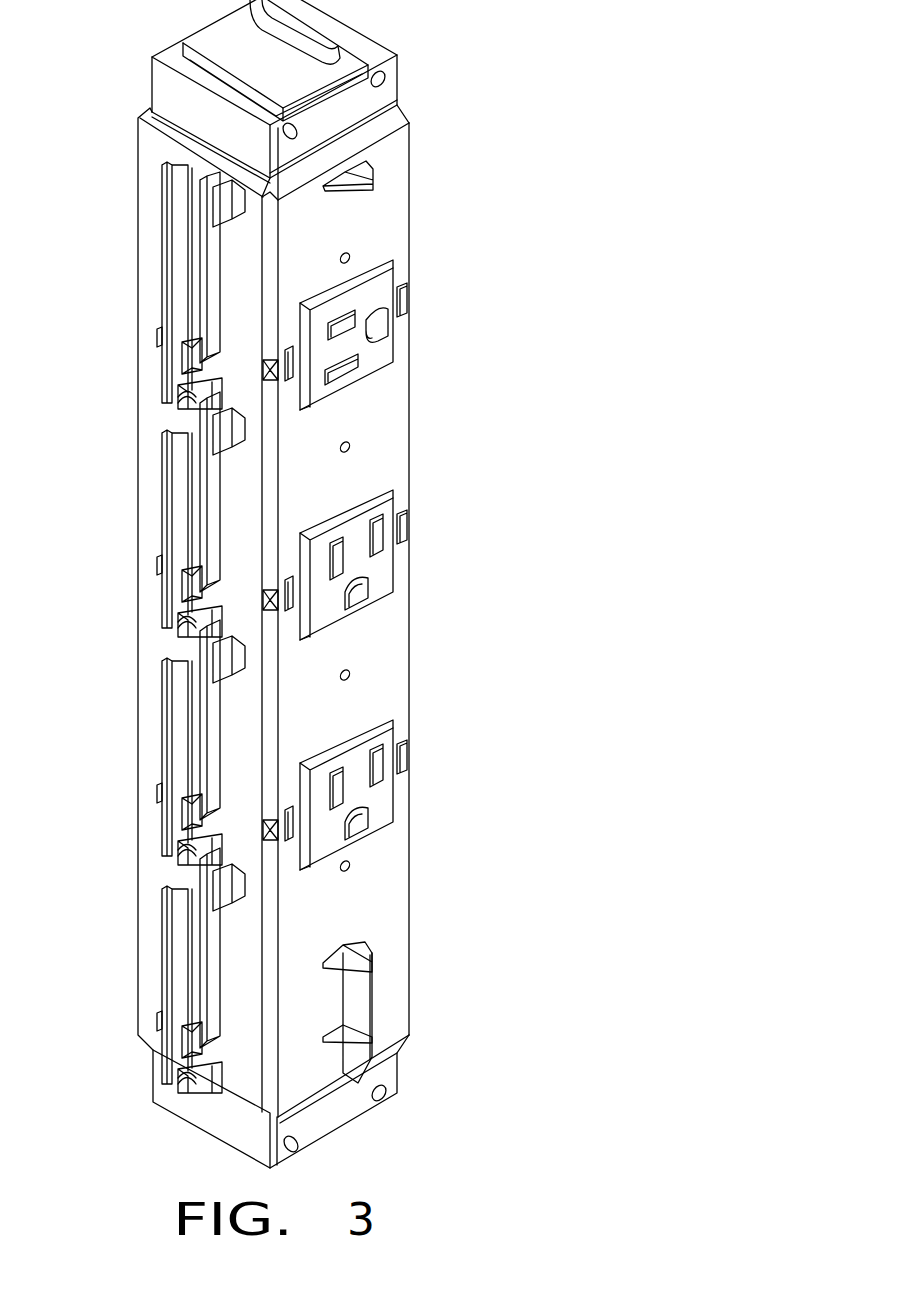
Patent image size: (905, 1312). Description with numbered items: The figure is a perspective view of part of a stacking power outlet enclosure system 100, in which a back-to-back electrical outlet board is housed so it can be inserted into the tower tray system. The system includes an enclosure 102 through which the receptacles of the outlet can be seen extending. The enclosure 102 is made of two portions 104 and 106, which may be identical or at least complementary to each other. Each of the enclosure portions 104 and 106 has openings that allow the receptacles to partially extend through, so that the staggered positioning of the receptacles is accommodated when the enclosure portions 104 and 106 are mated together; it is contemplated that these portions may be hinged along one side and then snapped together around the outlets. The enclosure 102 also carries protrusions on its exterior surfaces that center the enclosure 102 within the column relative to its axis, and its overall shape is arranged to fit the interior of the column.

The stacking power outlet enclosure system 100 is at (490, 113).
The enclosure 102 is at (460, 245).
The enclosure portion 104 is at (410, 447).
The enclosure portion 106 is at (138, 507).